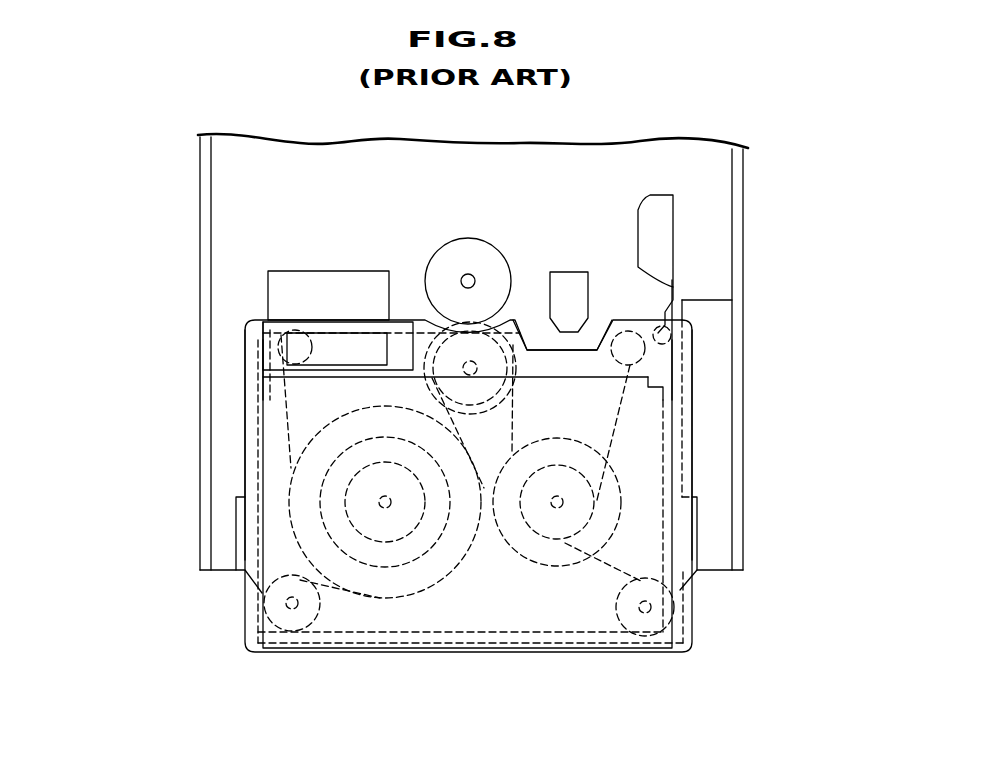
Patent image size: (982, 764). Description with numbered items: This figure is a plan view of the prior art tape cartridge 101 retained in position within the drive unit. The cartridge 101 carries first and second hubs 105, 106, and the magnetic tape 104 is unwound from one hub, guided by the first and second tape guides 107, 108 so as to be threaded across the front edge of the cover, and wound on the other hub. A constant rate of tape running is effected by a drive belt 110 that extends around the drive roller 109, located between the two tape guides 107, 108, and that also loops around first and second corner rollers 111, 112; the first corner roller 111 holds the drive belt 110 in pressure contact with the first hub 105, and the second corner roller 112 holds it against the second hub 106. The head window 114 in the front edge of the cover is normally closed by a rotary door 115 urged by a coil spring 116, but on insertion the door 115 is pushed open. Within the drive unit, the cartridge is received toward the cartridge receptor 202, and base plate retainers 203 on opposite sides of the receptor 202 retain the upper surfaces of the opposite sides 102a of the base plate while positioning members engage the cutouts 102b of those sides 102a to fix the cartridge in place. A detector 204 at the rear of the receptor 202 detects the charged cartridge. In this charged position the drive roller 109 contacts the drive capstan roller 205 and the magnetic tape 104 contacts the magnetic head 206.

The tape cartridge 101 is at (407, 658).
The opposite sides of the base plate 102a is at (250, 338).
The cutouts 102b is at (250, 369).
The magnetic tape 104 is at (605, 333).
The first hub 105 is at (350, 482).
The second hub 106 is at (598, 513).
The first tape guide 107 is at (288, 342).
The second tape guide 108 is at (623, 353).
The drive roller 109 is at (427, 340).
The drive belt 110 is at (480, 634).
The first corner roller 111 is at (287, 622).
The second corner roller 112 is at (636, 622).
The head window 114 is at (608, 333).
The rotary door 115 is at (667, 218).
The coil spring 116 is at (667, 333).
The cartridge receptor 202 is at (233, 565).
The base plate retainers 203 is at (250, 478).
The detector 204 is at (337, 283).
The drive capstan roller 205 is at (471, 250).
The magnetic head 206 is at (573, 280).